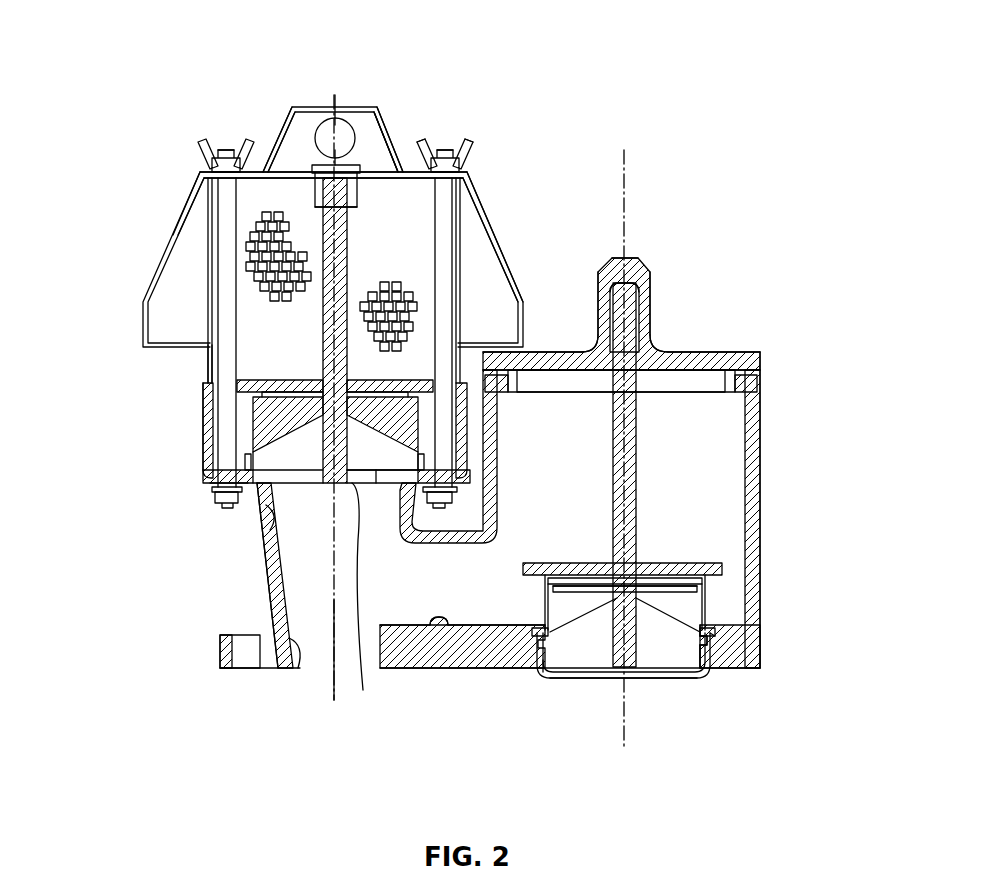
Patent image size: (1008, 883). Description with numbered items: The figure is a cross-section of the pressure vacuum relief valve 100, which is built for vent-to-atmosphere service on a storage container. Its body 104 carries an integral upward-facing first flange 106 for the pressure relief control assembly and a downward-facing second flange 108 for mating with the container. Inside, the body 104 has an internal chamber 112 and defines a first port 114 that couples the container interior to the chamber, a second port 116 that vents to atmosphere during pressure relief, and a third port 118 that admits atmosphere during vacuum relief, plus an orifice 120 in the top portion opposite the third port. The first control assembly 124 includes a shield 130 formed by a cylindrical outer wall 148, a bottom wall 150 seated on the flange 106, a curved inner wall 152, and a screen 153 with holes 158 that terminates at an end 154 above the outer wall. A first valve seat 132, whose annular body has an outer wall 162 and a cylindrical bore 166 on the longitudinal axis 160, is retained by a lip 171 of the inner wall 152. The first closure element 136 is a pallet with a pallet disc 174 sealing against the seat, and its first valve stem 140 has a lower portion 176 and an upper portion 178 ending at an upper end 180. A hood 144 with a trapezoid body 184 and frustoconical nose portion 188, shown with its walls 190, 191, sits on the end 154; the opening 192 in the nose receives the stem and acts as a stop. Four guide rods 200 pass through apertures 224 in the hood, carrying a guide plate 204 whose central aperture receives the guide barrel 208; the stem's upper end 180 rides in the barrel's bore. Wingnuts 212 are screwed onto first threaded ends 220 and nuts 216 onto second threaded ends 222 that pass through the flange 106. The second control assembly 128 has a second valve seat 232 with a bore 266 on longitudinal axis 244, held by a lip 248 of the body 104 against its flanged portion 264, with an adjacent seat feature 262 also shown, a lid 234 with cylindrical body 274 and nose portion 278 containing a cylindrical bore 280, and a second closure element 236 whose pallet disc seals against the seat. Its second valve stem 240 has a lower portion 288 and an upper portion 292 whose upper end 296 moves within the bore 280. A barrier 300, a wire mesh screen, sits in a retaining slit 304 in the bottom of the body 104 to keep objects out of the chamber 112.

The pressure vacuum relief valve 100 is at (712, 228).
The body 104 is at (770, 478).
The first flange 106 is at (215, 487).
The second flange 108 is at (220, 656).
The internal chamber 112 is at (425, 590).
The first port 114 is at (300, 668).
The second port 116 is at (265, 540).
The third port 118 is at (662, 678).
The orifice 120 is at (758, 412).
The first control assembly 124 is at (474, 150).
The second control assembly 128 is at (700, 352).
The shield 130 is at (186, 410).
The first valve seat 132 is at (376, 470).
The first closure element 136 is at (246, 388).
The first valve stem 140 is at (360, 226).
The hood 144 is at (500, 226).
The cylindrical outer wall 148 is at (215, 436).
The bottom wall 150 is at (213, 466).
The curved inner wall 152 is at (245, 458).
The screen 153 is at (213, 380).
The end 154 is at (195, 190).
The holes 158 is at (250, 268).
The longitudinal axis 160 is at (330, 668).
The outer wall 162 is at (420, 410).
The cylindrical bore 166 is at (363, 690).
The lip 171 is at (250, 412).
The pallet disc 174 is at (290, 380).
The lower portion 176 is at (272, 598).
The upper portion 178 is at (305, 178).
The upper end 180 is at (368, 132).
The body 184 is at (213, 182).
The frustoconical nose portion 188 is at (349, 104).
The cap 190 is at (360, 118).
The cap wall 191 is at (290, 108).
The opening 192 is at (328, 130).
The guide rods 200 is at (222, 244).
The guide plate 204 is at (268, 168).
The guide barrel 208 is at (376, 168).
The nuts 212 is at (222, 148).
The nuts 216 is at (220, 502).
The first threaded end 220 is at (225, 150).
The second threaded end 222 is at (232, 510).
The aperture 224 is at (243, 176).
The second valve seat 232 is at (722, 604).
The lid 234 is at (740, 348).
The second closure element 236 is at (668, 562).
The second valve stem 240 is at (365, 205).
The longitudinal axis 244 is at (625, 720).
The lip 248 is at (515, 668).
The plate 262 is at (712, 582).
The flanged portion 264 is at (760, 646).
The bore 266 is at (562, 676).
The cylindrical body 274 is at (740, 352).
The nose portion 278 is at (630, 258).
The cylindrical bore 280 is at (640, 283).
The lower portion 288 is at (618, 598).
The upper portion 292 is at (612, 428).
The upper end 296 is at (678, 338).
The barrier 300 is at (706, 676).
The retaining slit 304 is at (716, 668).